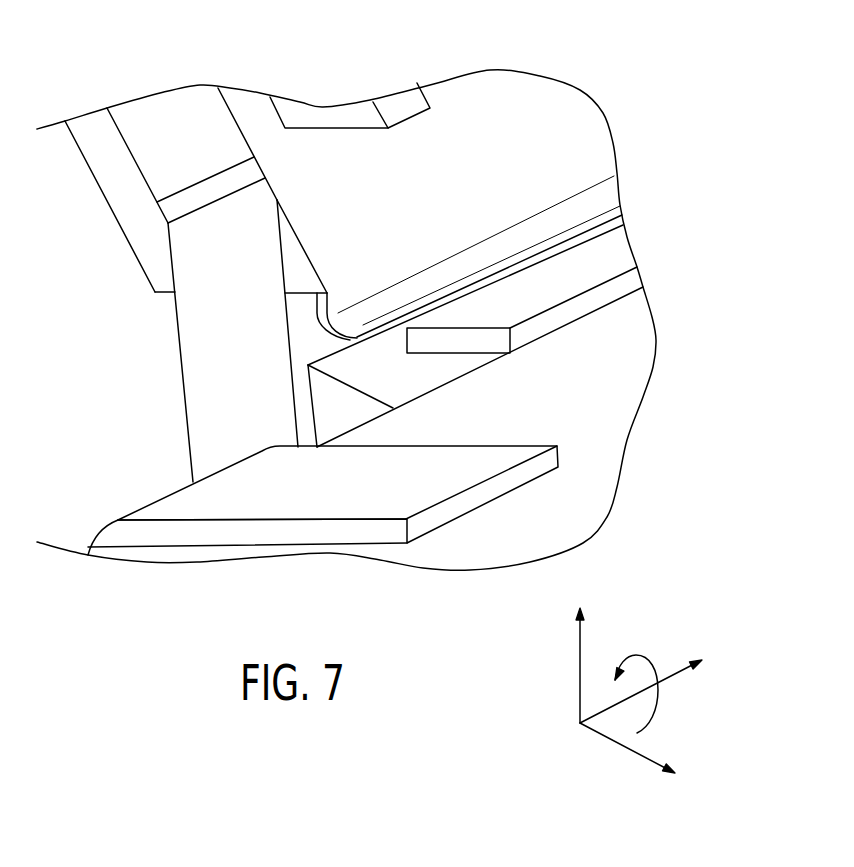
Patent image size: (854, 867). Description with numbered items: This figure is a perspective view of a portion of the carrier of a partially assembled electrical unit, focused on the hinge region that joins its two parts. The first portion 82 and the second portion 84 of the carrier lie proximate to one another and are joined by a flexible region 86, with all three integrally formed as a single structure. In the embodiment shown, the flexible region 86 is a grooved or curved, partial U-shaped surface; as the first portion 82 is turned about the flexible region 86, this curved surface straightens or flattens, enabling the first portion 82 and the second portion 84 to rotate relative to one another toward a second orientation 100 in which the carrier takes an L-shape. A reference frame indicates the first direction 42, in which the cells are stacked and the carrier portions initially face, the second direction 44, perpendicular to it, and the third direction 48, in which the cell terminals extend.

The first portion 82 is at (490, 98).
The second portion 84 is at (628, 390).
The flexible region 86 is at (596, 200).
The first direction 42 is at (618, 747).
The second direction 44 is at (670, 680).
The third direction 48 is at (578, 673).
The second orientation 100 is at (645, 657).